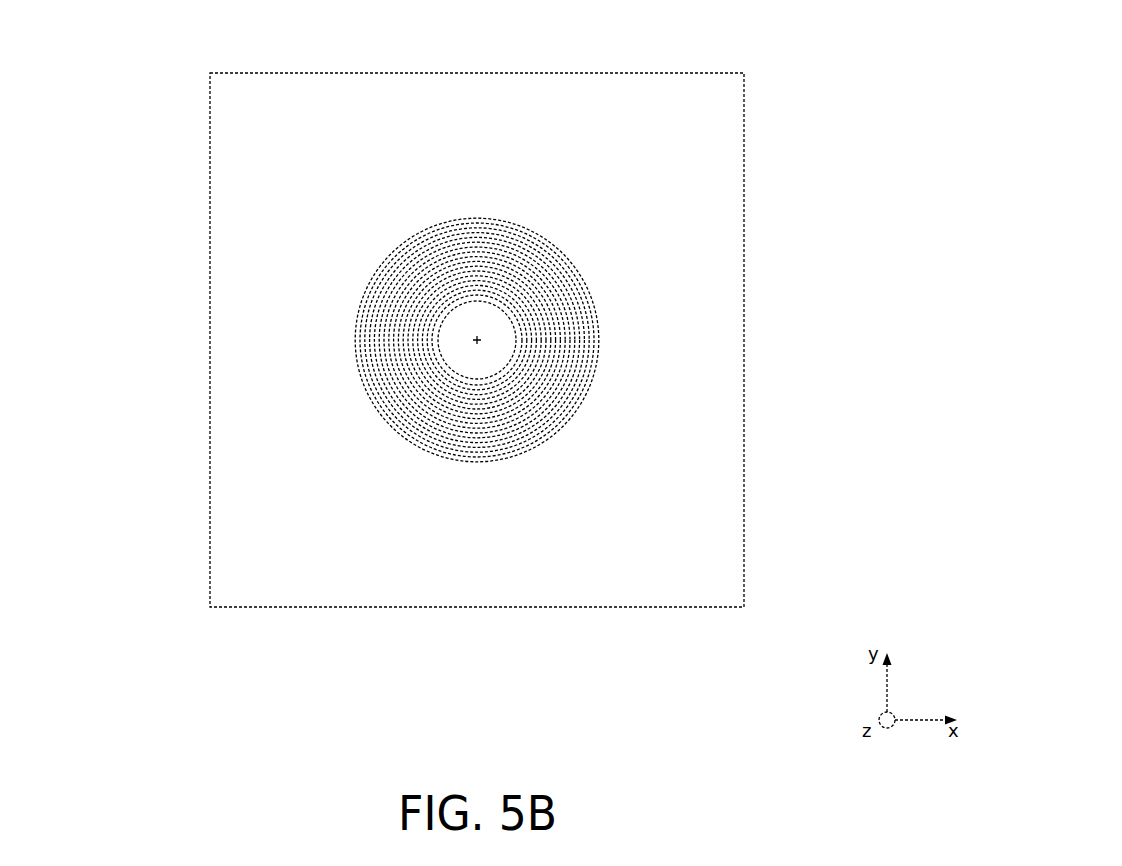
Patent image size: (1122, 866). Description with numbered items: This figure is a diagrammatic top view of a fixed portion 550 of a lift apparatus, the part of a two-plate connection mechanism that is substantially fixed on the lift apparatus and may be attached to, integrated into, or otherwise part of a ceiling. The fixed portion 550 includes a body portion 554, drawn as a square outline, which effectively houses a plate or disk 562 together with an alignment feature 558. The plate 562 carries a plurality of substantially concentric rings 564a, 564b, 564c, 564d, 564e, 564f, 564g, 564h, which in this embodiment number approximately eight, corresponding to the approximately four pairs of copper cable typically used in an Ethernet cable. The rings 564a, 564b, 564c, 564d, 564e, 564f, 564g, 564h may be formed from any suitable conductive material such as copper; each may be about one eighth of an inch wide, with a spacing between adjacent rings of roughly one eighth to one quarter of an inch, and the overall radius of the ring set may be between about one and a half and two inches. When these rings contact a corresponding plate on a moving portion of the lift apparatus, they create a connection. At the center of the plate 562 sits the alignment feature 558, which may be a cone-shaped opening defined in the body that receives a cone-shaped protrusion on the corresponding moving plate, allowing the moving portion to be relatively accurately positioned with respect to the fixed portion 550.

The fixed portion 550 is at (125, 50).
The body portion 554 is at (695, 73).
The alignment feature 558 is at (492, 338).
The plate 562 is at (563, 250).
The concentric ring 564a is at (468, 390).
The concentric ring 564b is at (497, 395).
The concentric ring 564c is at (520, 400).
The concentric ring 564d is at (533, 388).
The concentric ring 564e is at (597, 375).
The concentric ring 564f is at (575, 352).
The concentric ring 564g is at (575, 310).
The concentric ring 564h is at (575, 287).